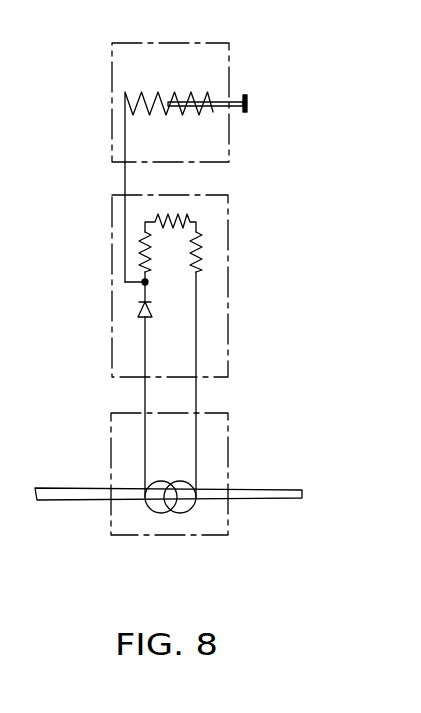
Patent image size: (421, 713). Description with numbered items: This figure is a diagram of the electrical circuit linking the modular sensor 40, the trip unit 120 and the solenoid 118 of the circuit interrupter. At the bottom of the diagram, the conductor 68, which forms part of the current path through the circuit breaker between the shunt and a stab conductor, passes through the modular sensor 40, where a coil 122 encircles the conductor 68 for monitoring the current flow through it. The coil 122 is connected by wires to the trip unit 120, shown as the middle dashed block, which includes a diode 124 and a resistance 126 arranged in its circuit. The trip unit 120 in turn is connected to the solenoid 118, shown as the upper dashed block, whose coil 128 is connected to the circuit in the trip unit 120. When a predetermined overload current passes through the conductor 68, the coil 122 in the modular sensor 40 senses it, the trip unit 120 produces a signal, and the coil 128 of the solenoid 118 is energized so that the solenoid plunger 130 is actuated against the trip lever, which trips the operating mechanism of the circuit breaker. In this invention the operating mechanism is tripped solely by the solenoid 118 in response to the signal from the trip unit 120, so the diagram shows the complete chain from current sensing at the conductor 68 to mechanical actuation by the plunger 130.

The solenoid 118 is at (195, 43).
The coil of the solenoid 128 is at (143, 93).
The solenoid plunger 130 is at (220, 108).
The trip unit 120 is at (232, 215).
The resistance 126 is at (172, 228).
The diode 124 is at (138, 316).
The modular sensor 40 is at (213, 435).
The coil 122 is at (165, 484).
The conductor 68 is at (50, 500).